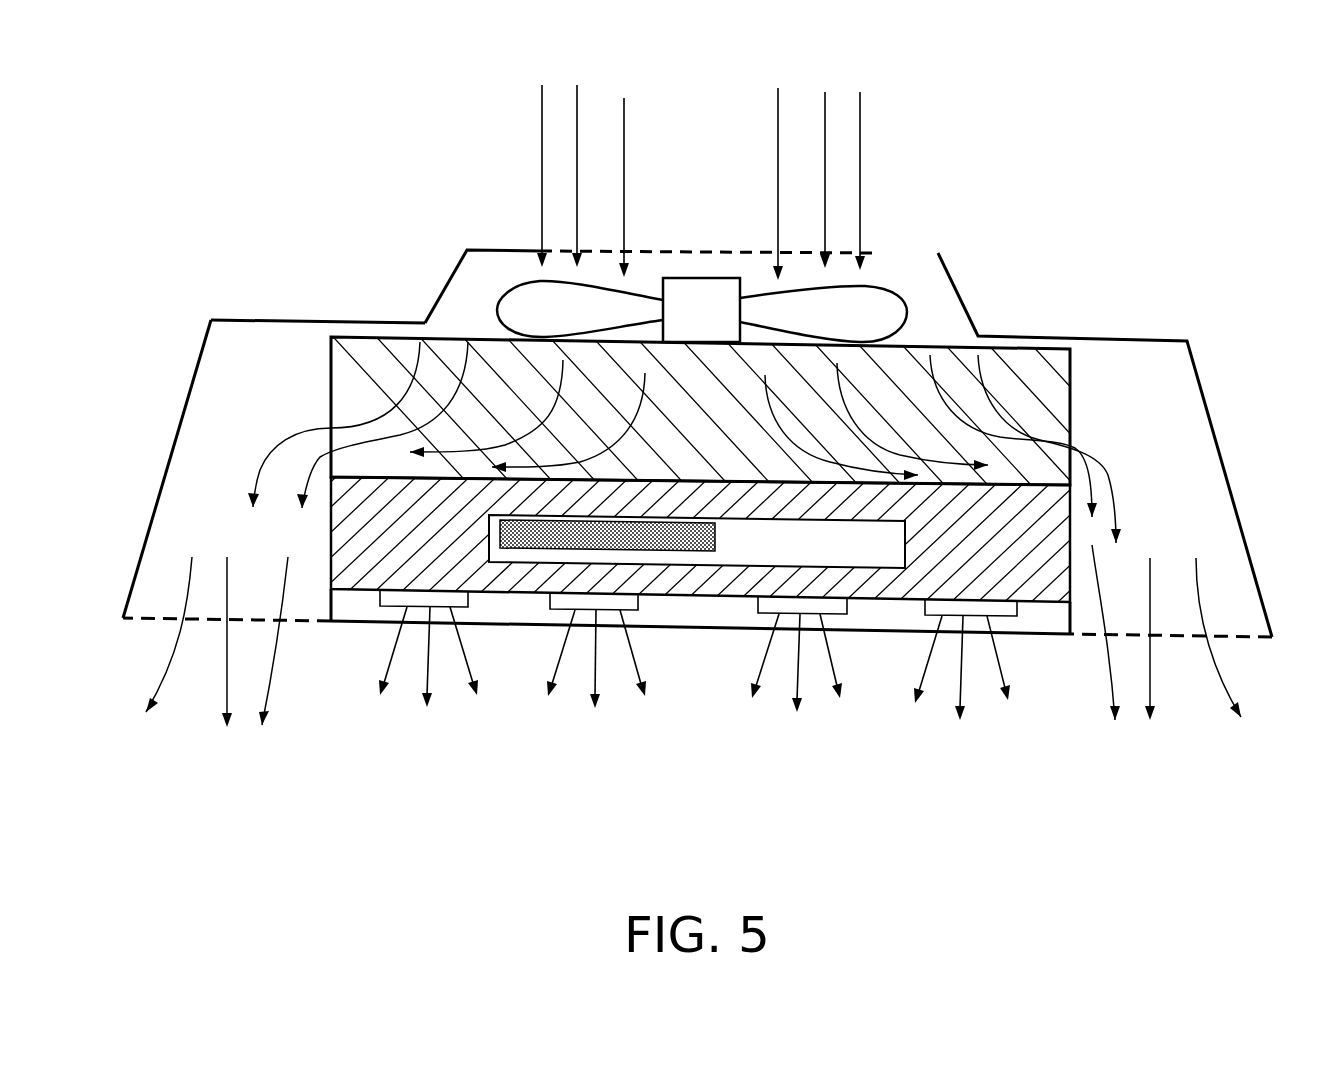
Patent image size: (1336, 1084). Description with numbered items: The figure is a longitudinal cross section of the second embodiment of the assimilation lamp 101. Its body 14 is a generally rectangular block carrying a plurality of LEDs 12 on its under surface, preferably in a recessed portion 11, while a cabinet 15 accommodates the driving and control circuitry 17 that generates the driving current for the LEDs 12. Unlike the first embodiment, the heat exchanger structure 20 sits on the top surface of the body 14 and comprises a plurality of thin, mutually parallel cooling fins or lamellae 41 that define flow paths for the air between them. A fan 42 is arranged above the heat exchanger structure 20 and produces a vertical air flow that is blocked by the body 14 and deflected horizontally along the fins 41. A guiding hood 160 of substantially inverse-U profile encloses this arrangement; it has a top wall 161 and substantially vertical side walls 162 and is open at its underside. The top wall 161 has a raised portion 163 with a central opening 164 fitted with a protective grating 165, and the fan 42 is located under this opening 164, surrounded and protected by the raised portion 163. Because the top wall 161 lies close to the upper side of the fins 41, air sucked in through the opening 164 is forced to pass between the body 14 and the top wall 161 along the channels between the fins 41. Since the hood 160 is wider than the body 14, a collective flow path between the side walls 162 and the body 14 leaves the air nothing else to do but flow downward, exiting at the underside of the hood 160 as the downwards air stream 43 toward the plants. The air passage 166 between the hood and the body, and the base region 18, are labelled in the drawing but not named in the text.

The assimilation lamp 101 is at (383, 124).
The guiding hood 160 is at (203, 302).
The top wall 161 is at (340, 323).
The side walls 162 is at (172, 452).
The raised portion 163 is at (449, 278).
The central opening 164 is at (678, 260).
The protective grating 165 is at (718, 250).
The air channel 166 is at (241, 420).
The fan 42 is at (853, 307).
The cooling fins or lamellae 41 is at (1022, 392).
The heat exchanger structure 20 is at (1085, 403).
The downwards air stream 43 is at (1184, 651).
The body 14 is at (1047, 556).
The cabinet 15 is at (873, 553).
The driving and control circuitry 17 is at (690, 543).
The recessed portion 11 is at (518, 612).
The bottom plate 18 is at (1022, 635).
The LEDs 12 is at (441, 598).